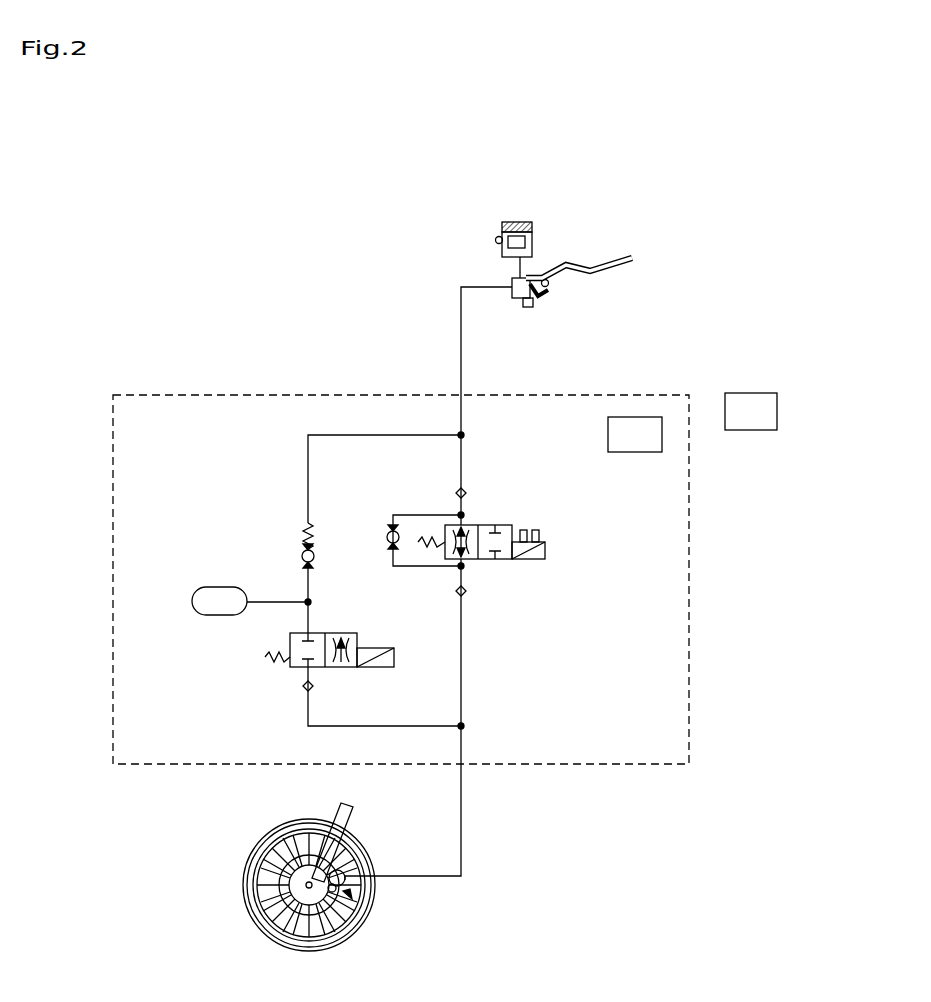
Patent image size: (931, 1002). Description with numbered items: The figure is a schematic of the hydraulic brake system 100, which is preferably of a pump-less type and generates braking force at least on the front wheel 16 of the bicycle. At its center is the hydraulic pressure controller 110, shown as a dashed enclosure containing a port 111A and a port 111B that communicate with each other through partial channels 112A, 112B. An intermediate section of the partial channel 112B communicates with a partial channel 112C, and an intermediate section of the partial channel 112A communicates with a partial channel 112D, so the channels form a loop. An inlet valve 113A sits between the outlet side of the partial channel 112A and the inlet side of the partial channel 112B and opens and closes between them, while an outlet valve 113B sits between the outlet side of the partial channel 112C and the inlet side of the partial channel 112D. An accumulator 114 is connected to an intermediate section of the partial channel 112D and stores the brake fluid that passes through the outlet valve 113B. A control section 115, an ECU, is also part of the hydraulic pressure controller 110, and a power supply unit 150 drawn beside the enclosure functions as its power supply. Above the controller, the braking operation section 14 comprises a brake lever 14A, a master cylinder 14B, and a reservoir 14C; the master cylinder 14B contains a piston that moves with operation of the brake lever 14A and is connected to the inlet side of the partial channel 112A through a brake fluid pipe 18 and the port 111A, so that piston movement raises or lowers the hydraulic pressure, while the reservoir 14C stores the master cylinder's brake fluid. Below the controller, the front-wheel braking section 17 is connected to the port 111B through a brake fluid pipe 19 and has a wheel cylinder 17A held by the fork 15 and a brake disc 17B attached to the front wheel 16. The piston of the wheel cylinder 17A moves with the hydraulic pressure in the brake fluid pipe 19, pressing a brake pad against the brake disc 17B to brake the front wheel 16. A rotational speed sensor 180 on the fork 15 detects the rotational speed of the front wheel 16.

The hydraulic brake system 100 is at (748, 131).
The braking operation section 14 is at (576, 226).
The brake lever 14A is at (617, 256).
The master cylinder 14B is at (517, 300).
The reservoir 14C is at (512, 222).
The brake fluid pipe 18 is at (483, 285).
The hydraulic pressure controller 110 is at (198, 378).
The port 111A is at (461, 393).
The port 111B is at (462, 767).
The partial channel 112A is at (463, 466).
The partial channel 112B is at (463, 690).
The partial channel 112C is at (355, 727).
The partial channel 112D is at (357, 436).
The inlet valve 113A is at (505, 560).
The outlet valve 113B is at (367, 617).
The accumulator 114 is at (218, 583).
The control section 115 is at (632, 452).
The power supply unit 150 is at (762, 393).
The brake fluid pipe 19 is at (463, 850).
The fork 15 is at (313, 825).
The front wheel 16 is at (262, 922).
The front-wheel braking section 17 is at (357, 908).
The wheel cylinder 17A is at (420, 813).
The brake disc 17B is at (338, 927).
The rotational speed sensor 180 is at (305, 898).